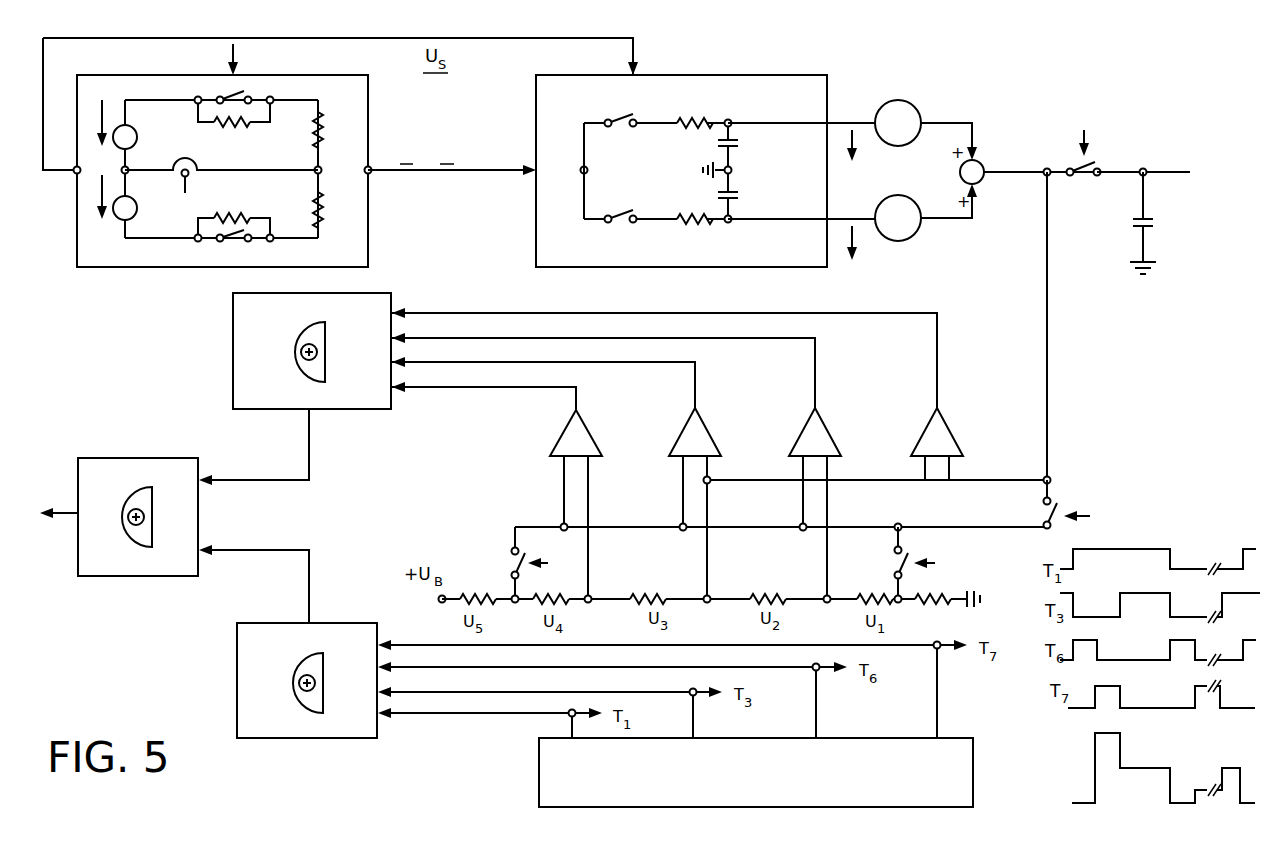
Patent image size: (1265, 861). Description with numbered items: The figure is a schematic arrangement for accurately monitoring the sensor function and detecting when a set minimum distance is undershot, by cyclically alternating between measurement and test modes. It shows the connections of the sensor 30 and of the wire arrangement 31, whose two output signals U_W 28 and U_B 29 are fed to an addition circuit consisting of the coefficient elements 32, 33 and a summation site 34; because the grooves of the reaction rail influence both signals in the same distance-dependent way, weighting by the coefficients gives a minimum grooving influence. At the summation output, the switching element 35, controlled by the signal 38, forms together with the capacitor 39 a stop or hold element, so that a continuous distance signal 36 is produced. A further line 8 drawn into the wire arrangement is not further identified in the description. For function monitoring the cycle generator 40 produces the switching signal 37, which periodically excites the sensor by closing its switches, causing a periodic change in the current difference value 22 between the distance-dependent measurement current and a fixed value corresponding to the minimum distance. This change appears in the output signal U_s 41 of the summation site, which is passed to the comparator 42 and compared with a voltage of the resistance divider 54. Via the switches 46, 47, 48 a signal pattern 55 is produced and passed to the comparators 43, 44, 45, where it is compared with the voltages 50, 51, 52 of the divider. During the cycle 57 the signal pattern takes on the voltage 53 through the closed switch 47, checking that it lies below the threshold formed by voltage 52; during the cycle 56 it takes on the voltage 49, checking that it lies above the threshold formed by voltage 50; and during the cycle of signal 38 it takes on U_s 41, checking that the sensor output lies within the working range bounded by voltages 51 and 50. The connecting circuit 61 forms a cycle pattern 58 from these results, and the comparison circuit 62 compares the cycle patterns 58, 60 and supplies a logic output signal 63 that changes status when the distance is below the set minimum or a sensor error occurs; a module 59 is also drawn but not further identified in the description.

The control signal line 8 is at (633, 51).
The current difference value 22 is at (407, 173).
The signal U_W 28 is at (850, 120).
The signal U_B 29 is at (864, 216).
The sensor 30 is at (122, 268).
The wire arrangement 31 is at (575, 269).
The coefficient element K_W 32 is at (920, 119).
The coefficient element K_B 33 is at (917, 204).
The summation site 34 is at (983, 169).
The switching element 35 is at (1088, 181).
The continuous distance signal 36 is at (1134, 172).
The switching signal T1 37 is at (236, 66).
The signal T3 38 is at (1088, 149).
The capacitor 39 is at (1154, 222).
The cycle generator 40 is at (539, 767).
The output signal U_s 41 is at (1048, 262).
The comparator 42 is at (970, 440).
The comparator 43 is at (848, 440).
The comparator 44 is at (729, 440).
The comparator 45 is at (611, 440).
The switch 46 is at (508, 562).
The switch 47 is at (900, 568).
The switch 48 is at (1044, 519).
The voltage U5 49 is at (516, 603).
The voltage U4 50 is at (589, 603).
The voltage U3 51 is at (708, 603).
The voltage U2 52 is at (835, 613).
The voltage U1 53 is at (899, 603).
The resistance divider 54 is at (970, 612).
The signal pattern 55 is at (652, 526).
The cycle T7 56 is at (571, 567).
The cycle T6 57 is at (966, 562).
The cycle pattern 58 is at (309, 583).
The cycle control 59 is at (376, 740).
The cycle pattern 60 is at (309, 445).
The connecting circuit 61 is at (259, 411).
The comparison circuit 62 is at (166, 579).
The logic output signal 63 is at (55, 497).